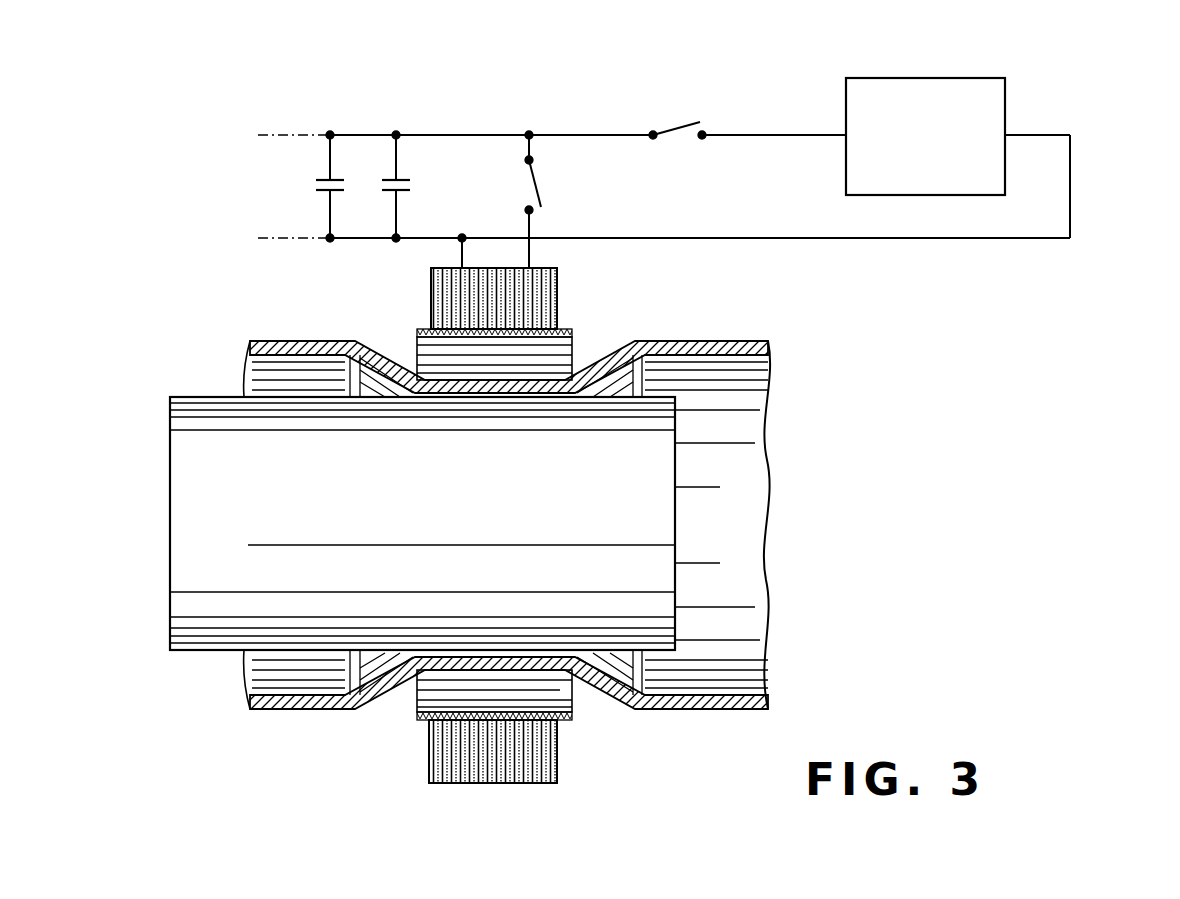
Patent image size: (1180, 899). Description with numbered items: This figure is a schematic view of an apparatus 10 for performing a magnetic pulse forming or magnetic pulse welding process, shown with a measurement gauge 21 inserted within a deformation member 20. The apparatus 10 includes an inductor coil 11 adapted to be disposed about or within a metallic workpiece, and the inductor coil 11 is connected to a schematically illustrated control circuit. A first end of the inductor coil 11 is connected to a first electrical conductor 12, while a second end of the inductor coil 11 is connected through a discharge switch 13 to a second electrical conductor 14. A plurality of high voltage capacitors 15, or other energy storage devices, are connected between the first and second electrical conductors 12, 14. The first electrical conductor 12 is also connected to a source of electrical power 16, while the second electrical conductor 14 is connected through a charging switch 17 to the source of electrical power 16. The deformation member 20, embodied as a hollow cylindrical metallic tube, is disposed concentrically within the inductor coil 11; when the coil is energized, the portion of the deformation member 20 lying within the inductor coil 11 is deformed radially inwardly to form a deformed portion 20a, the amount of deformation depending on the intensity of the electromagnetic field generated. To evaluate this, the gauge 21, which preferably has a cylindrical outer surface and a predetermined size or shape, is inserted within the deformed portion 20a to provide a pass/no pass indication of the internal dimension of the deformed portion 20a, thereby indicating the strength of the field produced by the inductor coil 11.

The apparatus 10 is at (278, 78).
The inductor coil 11 is at (431, 298).
The first electrical conductor 12 is at (1072, 188).
The discharge switch 13 is at (538, 182).
The second electrical conductor 14 is at (468, 134).
The high voltage capacitors 15 is at (392, 178).
The source of electrical power 16 is at (915, 78).
The charging switch 17 is at (678, 128).
The deformation member 20 is at (316, 710).
The deformed portion 20a is at (520, 658).
The measurement gauge 21 is at (351, 502).